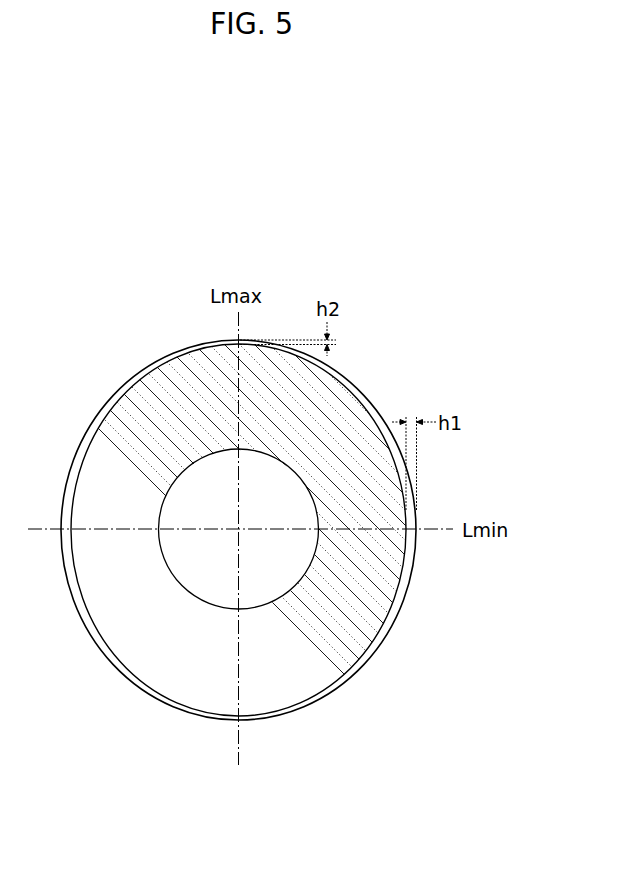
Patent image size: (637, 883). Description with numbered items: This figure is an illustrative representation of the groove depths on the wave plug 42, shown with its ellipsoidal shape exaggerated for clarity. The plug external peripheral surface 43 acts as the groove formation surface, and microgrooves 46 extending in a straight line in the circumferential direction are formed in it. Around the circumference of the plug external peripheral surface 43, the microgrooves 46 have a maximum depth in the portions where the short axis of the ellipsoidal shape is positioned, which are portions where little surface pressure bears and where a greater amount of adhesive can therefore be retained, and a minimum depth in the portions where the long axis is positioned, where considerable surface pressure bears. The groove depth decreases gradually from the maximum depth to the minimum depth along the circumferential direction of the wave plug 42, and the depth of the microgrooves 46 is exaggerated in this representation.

The wave plug 42 is at (178, 340).
The plug external peripheral surface 43 is at (112, 397).
The microgrooves 46 is at (375, 410).